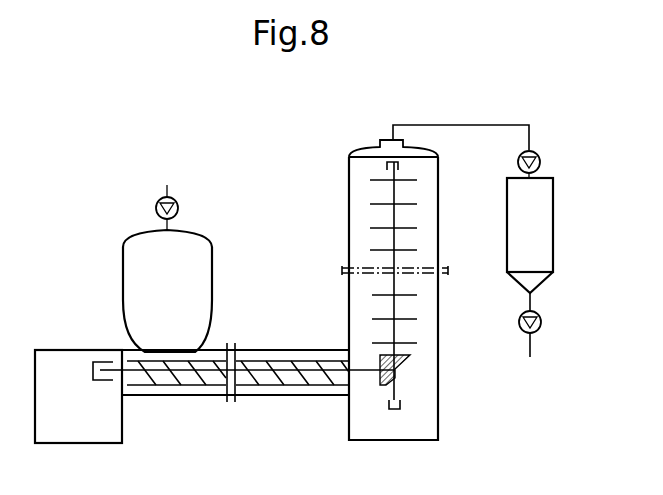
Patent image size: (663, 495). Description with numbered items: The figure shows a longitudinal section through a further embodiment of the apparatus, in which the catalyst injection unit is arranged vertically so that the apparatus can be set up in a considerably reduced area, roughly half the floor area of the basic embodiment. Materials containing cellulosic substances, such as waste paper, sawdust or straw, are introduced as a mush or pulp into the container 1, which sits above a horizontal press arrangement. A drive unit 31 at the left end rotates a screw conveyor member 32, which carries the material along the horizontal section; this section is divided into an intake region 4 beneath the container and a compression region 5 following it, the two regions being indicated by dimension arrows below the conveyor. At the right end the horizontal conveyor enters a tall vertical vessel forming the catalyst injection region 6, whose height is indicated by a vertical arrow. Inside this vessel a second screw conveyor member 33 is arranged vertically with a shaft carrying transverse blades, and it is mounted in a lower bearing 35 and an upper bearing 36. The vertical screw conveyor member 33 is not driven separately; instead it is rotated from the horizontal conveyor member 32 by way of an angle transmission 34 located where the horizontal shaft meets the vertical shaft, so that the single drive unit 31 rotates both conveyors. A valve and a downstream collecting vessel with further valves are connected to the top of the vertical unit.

The container 1 is at (205, 281).
The drive unit 31 is at (74, 352).
The screw conveyor member 32 is at (282, 387).
The screw conveyor member 33 is at (375, 203).
The angle transmission 34 is at (380, 362).
The bearing 35 is at (400, 405).
The bearing 36 is at (387, 165).
The intake region 4 is at (236, 463).
The compression region 5 is at (348, 462).
The catalyst injection region 6 is at (474, 150).